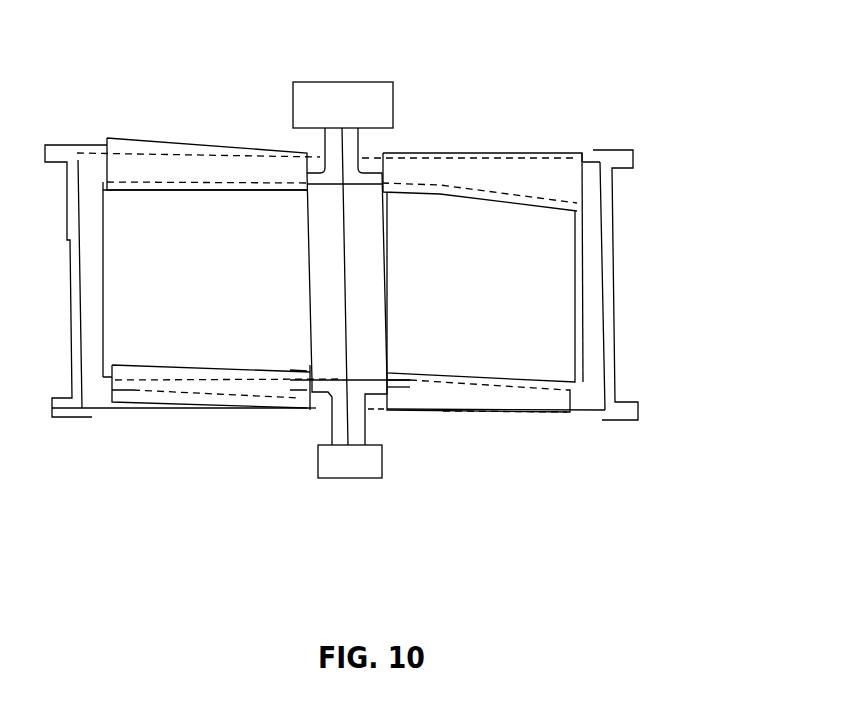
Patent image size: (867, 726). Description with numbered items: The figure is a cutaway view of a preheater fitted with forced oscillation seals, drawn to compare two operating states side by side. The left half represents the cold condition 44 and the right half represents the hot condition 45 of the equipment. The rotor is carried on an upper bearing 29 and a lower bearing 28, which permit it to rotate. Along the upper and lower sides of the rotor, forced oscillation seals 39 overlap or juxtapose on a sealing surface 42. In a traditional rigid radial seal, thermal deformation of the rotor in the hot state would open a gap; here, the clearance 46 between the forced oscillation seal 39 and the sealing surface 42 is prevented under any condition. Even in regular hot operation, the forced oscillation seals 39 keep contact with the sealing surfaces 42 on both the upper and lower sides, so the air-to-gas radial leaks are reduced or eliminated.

The lower bearing 28 is at (347, 467).
The upper bearing 29 is at (350, 100).
The forced oscillation seal 39 is at (163, 142).
The sealing surface 42 is at (98, 152).
The cold condition 44 is at (227, 297).
The hot condition 45 is at (500, 313).
The clearance 46 is at (575, 408).